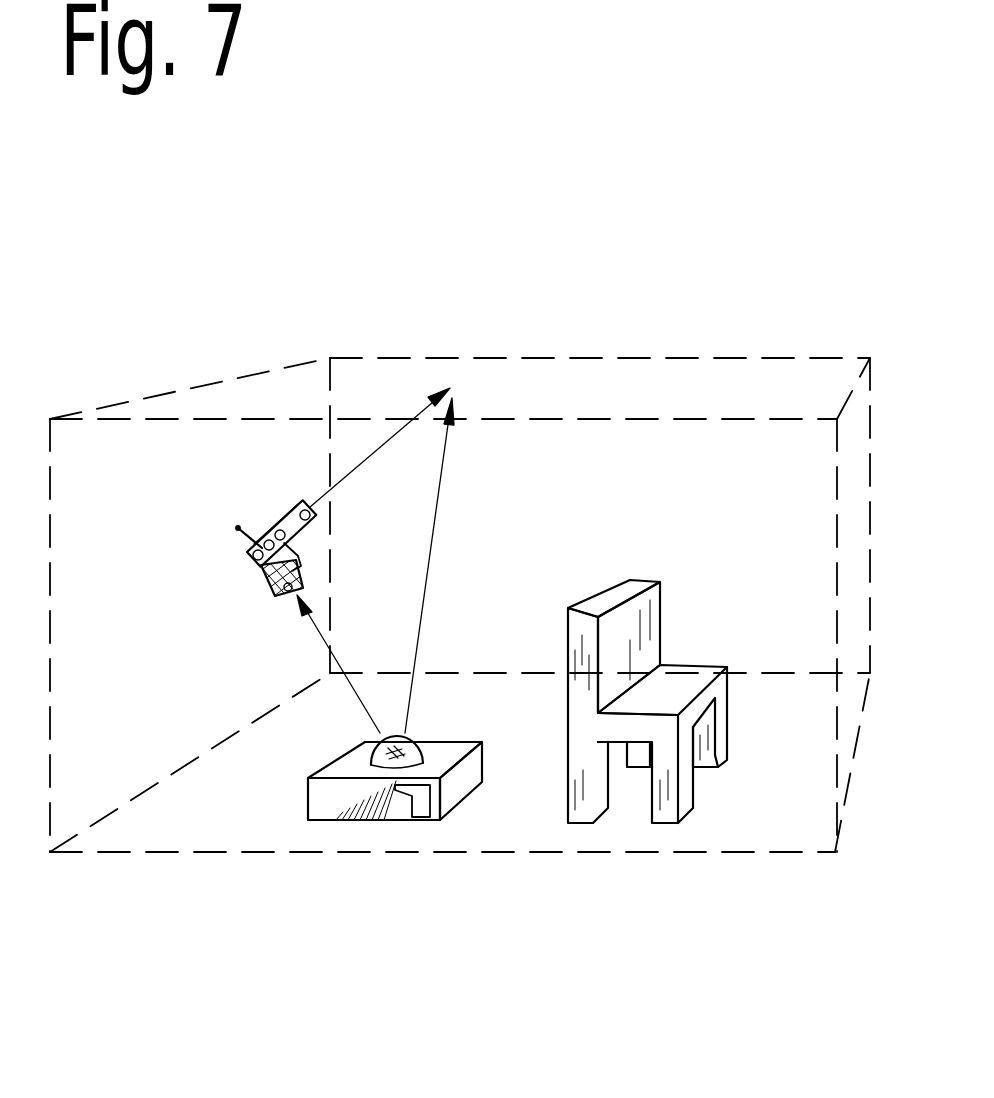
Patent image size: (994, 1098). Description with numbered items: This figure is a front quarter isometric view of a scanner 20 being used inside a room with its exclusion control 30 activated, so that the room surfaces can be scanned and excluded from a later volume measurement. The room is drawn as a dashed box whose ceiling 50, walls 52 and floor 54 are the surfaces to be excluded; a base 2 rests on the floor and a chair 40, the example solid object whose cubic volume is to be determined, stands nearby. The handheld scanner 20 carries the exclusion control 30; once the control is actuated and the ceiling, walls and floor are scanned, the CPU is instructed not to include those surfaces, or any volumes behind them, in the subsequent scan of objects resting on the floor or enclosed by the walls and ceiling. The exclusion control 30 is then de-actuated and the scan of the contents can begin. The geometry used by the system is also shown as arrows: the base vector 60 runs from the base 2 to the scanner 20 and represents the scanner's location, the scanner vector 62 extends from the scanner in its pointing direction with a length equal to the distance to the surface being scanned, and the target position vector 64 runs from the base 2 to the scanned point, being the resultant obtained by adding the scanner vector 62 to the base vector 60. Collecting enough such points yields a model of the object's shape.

The base 2 is at (322, 822).
The scanner 20 is at (260, 588).
The exclusion control 30 is at (263, 527).
The chair 40 is at (728, 728).
The ceiling 50 is at (652, 383).
The walls 52 is at (152, 473).
The floor 54 is at (775, 817).
The base vector 60 is at (318, 637).
The scanner vector 62 is at (355, 468).
The target position vector 64 is at (438, 492).